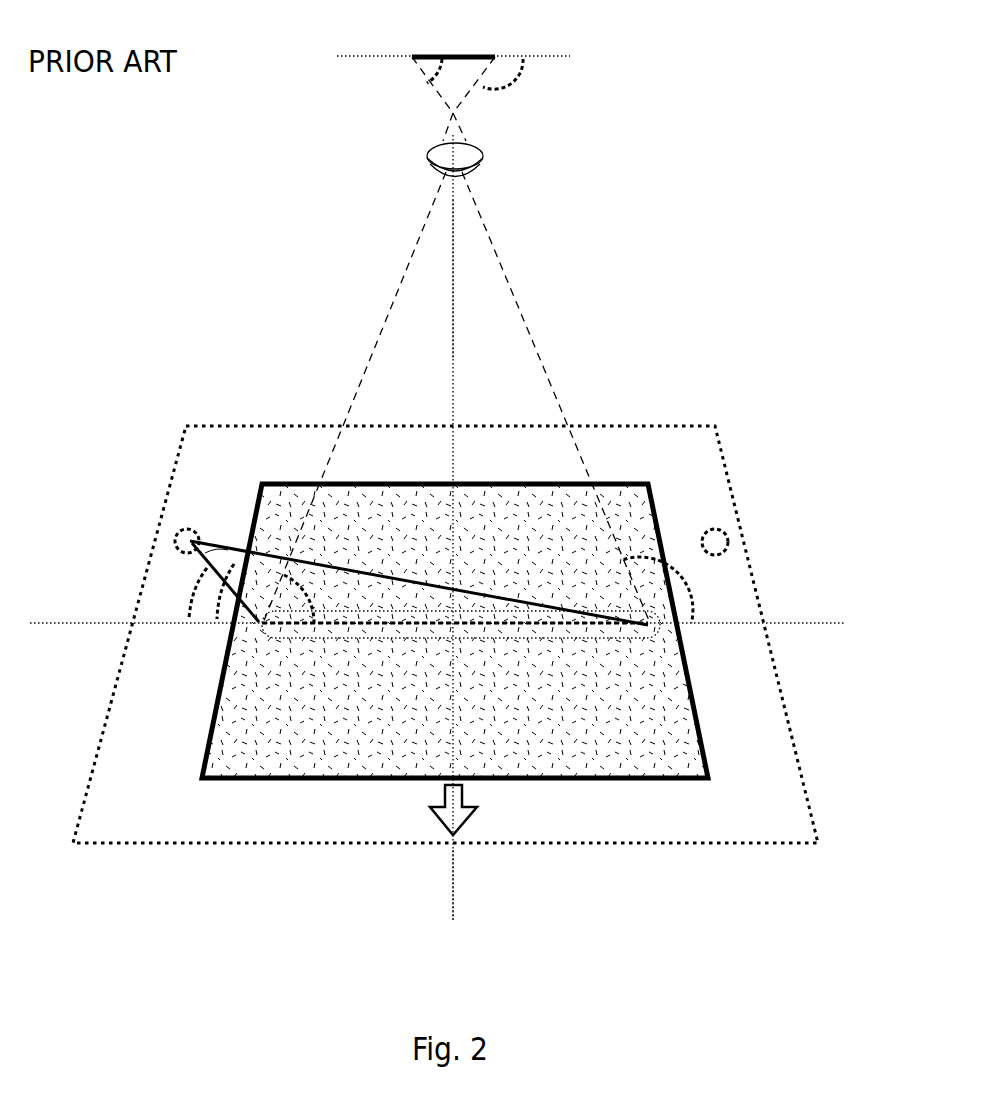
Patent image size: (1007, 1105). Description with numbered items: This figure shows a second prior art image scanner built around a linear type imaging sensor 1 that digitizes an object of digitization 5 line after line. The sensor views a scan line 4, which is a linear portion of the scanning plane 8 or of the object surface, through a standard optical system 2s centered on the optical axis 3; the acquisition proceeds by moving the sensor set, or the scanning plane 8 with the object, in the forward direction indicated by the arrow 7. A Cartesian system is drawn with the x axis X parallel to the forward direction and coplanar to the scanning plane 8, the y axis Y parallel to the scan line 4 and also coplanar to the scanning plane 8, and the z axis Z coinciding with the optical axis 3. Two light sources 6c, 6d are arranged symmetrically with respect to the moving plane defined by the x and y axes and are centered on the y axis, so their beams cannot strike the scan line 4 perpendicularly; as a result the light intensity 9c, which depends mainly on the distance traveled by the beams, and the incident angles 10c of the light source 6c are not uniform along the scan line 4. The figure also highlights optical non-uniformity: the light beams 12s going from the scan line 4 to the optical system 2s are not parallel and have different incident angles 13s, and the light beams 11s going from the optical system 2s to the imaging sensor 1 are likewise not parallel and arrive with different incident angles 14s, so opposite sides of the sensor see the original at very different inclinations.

The imaging sensor 1 is at (456, 55).
The incident angles on the imaging sensor 14s is at (442, 78).
The light beams directed to the imaging sensor 11s is at (472, 116).
The optical system 2s is at (483, 155).
The light beams directed to the optical system 12s is at (517, 308).
The optical axis 3 is at (455, 283).
The z axis Z is at (455, 282).
The incident angles respect to the optical system 13s is at (313, 590).
The light intensity 9c is at (223, 550).
The light source 6c is at (183, 531).
The light source 6d is at (715, 541).
The incident angles of the light source 10c is at (212, 600).
The scan line 4 is at (553, 630).
The object of digitization 5 is at (710, 772).
The scanning plane 8 is at (818, 842).
The arrow 7 is at (455, 826).
The y axis Y is at (787, 623).
The x axis X is at (452, 893).